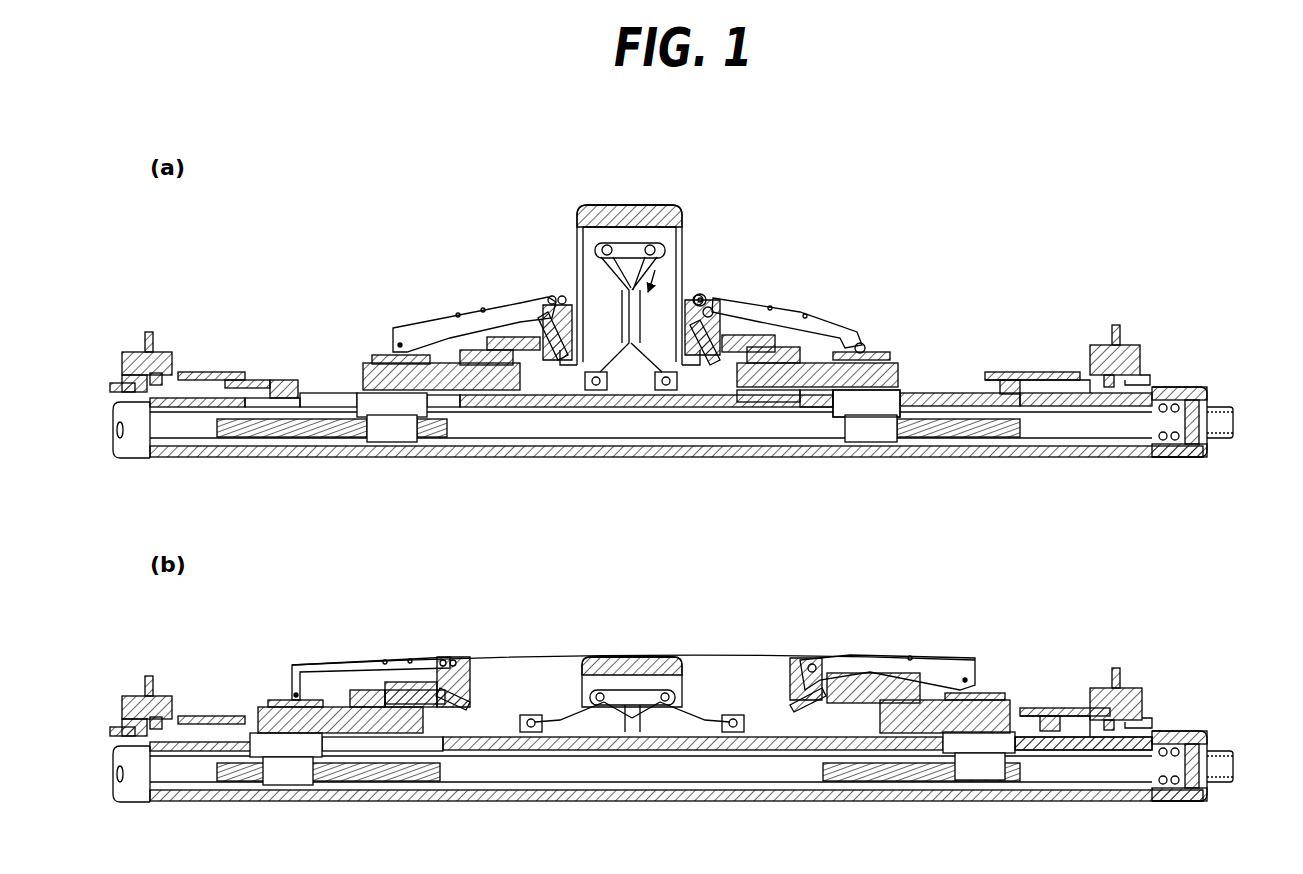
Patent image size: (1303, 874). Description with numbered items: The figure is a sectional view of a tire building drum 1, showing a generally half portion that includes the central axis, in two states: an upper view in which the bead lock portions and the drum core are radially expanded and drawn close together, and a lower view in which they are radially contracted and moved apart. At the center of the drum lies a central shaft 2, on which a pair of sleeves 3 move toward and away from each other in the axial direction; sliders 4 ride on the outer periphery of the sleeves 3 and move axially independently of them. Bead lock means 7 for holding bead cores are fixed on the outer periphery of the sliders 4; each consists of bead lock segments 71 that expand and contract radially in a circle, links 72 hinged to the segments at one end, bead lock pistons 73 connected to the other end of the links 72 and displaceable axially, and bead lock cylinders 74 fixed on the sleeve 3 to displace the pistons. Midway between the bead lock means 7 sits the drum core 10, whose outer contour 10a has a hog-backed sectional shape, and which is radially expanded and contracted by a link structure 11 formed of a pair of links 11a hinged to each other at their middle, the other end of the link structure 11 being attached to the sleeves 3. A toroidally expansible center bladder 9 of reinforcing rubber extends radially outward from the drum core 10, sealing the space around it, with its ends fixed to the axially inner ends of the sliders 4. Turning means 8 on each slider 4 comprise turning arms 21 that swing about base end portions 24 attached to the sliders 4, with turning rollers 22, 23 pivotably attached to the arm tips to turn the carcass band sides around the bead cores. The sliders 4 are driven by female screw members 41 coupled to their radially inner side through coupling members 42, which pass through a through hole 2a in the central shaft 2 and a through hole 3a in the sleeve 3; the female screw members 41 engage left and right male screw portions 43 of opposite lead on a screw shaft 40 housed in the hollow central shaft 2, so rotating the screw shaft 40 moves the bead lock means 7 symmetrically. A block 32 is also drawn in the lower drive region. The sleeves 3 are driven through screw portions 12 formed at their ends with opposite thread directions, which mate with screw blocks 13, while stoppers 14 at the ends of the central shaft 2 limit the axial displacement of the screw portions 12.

The tire building drum 1 is at (1085, 212).
The central shaft 2 is at (1005, 390).
The through hole 2a is at (828, 405).
The sleeve 3 is at (298, 394).
The through hole 3a is at (770, 405).
The slider 4 is at (470, 370).
The bead lock means 7 is at (517, 325).
The turning means 8 is at (458, 268).
The center bladder 9 is at (640, 205).
The drum core 10 is at (683, 220).
The outer contour 10a is at (610, 205).
The link structure 11 is at (665, 256).
The link 11a is at (655, 392).
The screw portion 12 is at (250, 372).
The screw block 13 is at (200, 372).
The stopper 14 is at (1120, 332).
The turning arm 21 is at (840, 325).
The turning roller 22 is at (706, 300).
The turning roller 23 is at (708, 306).
The base end portion 24 is at (866, 346).
The block 32 is at (860, 405).
The screw shaft 40 is at (1045, 428).
The female screw member 41 is at (380, 430).
The coupling member 42 is at (365, 405).
The male screw portion 43 is at (262, 432).
The bead lock segment 71 is at (550, 300).
The link 72 is at (555, 360).
The bead lock piston 73 is at (510, 350).
The bead lock cylinder 74 is at (465, 352).